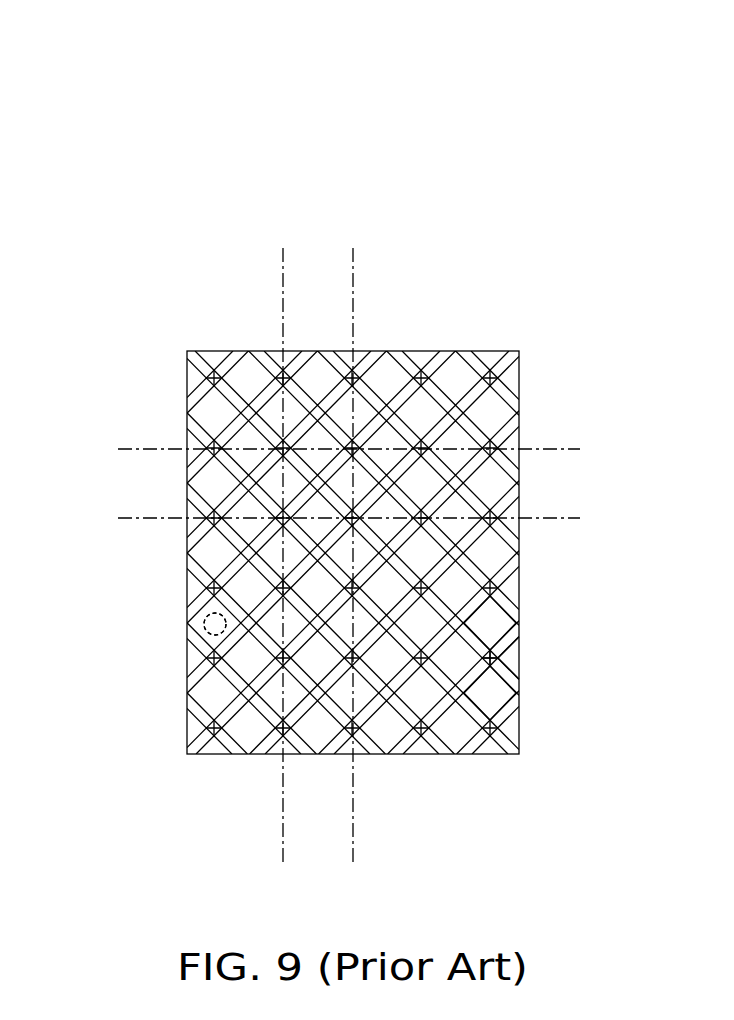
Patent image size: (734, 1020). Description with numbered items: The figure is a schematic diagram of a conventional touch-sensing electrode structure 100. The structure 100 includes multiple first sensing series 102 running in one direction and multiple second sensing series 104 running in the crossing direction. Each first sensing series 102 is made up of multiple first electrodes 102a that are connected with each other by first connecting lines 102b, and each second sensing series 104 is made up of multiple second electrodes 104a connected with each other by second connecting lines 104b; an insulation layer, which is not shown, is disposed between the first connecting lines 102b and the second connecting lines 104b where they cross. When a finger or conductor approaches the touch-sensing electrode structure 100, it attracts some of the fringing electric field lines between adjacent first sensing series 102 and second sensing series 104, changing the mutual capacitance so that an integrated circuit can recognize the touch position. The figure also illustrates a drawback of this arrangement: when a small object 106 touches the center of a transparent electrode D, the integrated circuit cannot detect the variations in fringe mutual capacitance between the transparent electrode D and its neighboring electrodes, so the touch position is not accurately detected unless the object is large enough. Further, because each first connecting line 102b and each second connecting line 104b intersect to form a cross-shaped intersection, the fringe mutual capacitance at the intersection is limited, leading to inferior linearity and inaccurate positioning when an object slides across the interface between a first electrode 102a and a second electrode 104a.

The touch-sensing electrode structure 100 is at (74, 47).
The first sensing series 102 is at (557, 449).
The first electrode 102a is at (512, 662).
The first connecting line 102b is at (490, 657).
The second sensing series 104 is at (283, 256).
The second electrode 104a is at (494, 618).
The second connecting line 104b is at (493, 665).
The small object 106 is at (209, 614).
The transparent electrode D is at (204, 624).